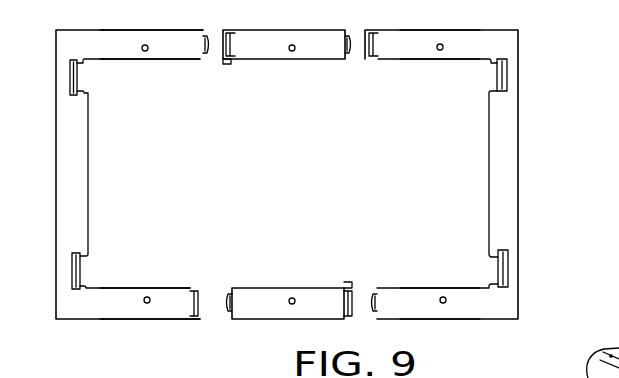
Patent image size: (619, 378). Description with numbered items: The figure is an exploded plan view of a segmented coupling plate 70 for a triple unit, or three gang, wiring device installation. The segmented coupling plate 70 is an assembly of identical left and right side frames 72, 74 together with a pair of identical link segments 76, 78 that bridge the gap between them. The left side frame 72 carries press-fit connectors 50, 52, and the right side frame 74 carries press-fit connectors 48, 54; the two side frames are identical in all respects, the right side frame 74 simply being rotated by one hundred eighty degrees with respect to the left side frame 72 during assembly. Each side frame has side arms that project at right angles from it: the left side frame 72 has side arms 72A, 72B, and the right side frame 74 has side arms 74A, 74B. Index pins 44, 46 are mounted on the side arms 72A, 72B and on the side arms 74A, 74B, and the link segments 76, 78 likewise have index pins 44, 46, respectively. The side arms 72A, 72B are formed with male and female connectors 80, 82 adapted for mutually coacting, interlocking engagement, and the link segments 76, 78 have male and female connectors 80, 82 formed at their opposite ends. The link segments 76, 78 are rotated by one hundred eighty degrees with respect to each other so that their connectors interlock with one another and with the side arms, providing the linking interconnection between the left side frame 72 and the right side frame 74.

The segmented coupling plate 70 is at (58, 22).
The left side frame 72 is at (56, 200).
The side arm of left side frame 72A is at (108, 300).
The side arm of left side frame 72B is at (110, 47).
The right side frame 74 is at (503, 222).
The side arm of right side frame 74A is at (392, 300).
The side arm of right side frame 74B is at (417, 50).
The link segment 76 is at (240, 300).
The link segment 78 is at (310, 50).
The male connector 80 is at (203, 37).
The female connector 82 is at (227, 45).
The index pin 44 is at (150, 296).
The index pin 46 is at (146, 52).
The press-fit connector 48 is at (510, 266).
The press-fit connector 50 is at (72, 267).
The press-fit connector 52 is at (70, 77).
The press-fit connector 54 is at (510, 73).